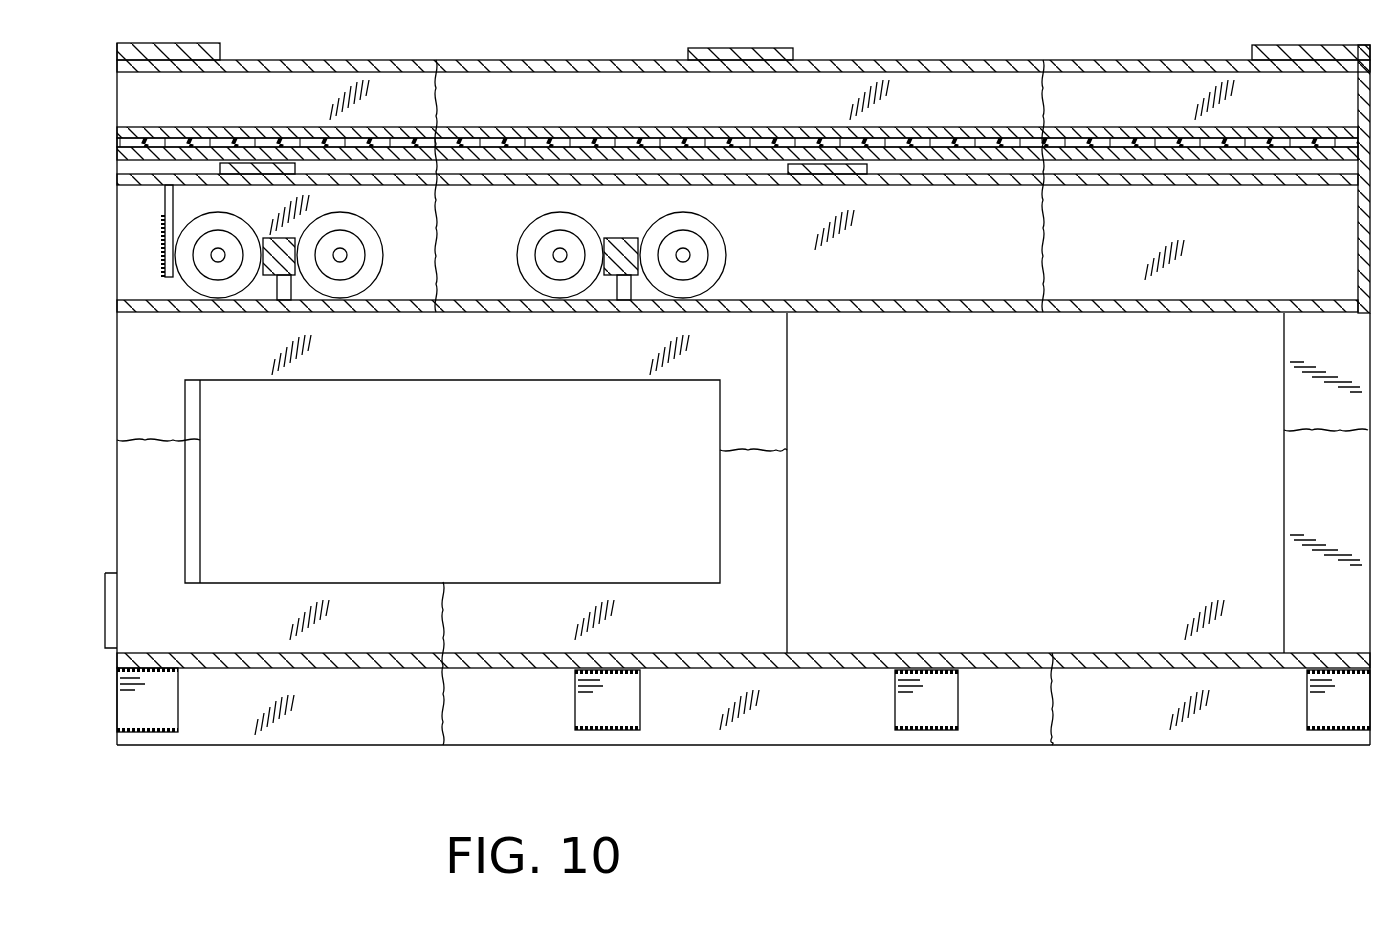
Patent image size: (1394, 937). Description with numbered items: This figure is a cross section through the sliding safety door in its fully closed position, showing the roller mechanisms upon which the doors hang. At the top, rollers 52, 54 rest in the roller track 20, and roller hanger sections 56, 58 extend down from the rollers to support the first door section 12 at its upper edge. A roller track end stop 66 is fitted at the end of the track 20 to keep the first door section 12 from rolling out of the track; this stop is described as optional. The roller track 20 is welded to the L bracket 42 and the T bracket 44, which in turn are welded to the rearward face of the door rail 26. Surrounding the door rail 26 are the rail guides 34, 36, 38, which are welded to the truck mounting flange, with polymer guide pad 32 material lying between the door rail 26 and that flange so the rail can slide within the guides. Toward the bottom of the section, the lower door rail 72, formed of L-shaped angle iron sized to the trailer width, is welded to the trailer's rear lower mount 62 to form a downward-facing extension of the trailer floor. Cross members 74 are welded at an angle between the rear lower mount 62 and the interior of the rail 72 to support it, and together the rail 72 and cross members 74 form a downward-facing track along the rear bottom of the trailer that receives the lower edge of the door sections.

The first door section 12 is at (772, 362).
The roller track 20 is at (943, 312).
The door rail 26 is at (500, 60).
The polymer guide pad 32 is at (372, 140).
The rail guide 34 is at (178, 52).
The rail guide 36 is at (752, 55).
The rail guide 38 is at (1290, 52).
The L bracket 42 is at (270, 163).
The T bracket 44 is at (862, 166).
The roller 52 is at (217, 262).
The roller 54 is at (718, 242).
The roller hanger section 56 is at (268, 292).
The roller hanger section 58 is at (612, 292).
The rear lower mount 62 is at (352, 718).
The roller track end stop 66 is at (165, 240).
The lower door rail 72 is at (853, 668).
The cross member 74 is at (165, 715).